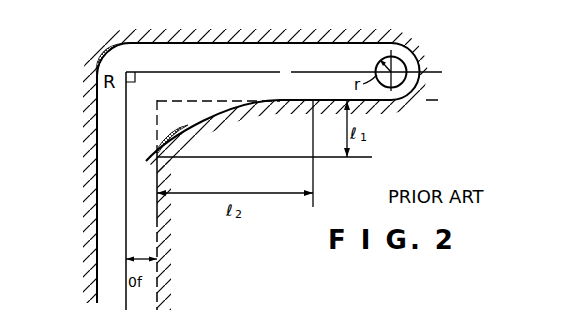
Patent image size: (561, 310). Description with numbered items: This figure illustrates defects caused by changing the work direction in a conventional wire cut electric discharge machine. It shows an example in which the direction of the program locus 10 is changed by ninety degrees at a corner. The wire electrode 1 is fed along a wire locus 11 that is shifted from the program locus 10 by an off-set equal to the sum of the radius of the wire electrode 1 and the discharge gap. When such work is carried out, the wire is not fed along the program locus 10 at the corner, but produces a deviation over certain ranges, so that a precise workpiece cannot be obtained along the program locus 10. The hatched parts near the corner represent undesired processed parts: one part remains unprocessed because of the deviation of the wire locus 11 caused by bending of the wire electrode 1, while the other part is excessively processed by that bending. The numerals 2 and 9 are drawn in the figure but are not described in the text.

The wire electrode 1 is at (412, 100).
The flange 2 is at (164, 288).
The circular groove bottom radius 9 is at (411, 49).
The program locus 10 is at (202, 101).
The wire locus 11 is at (224, 72).